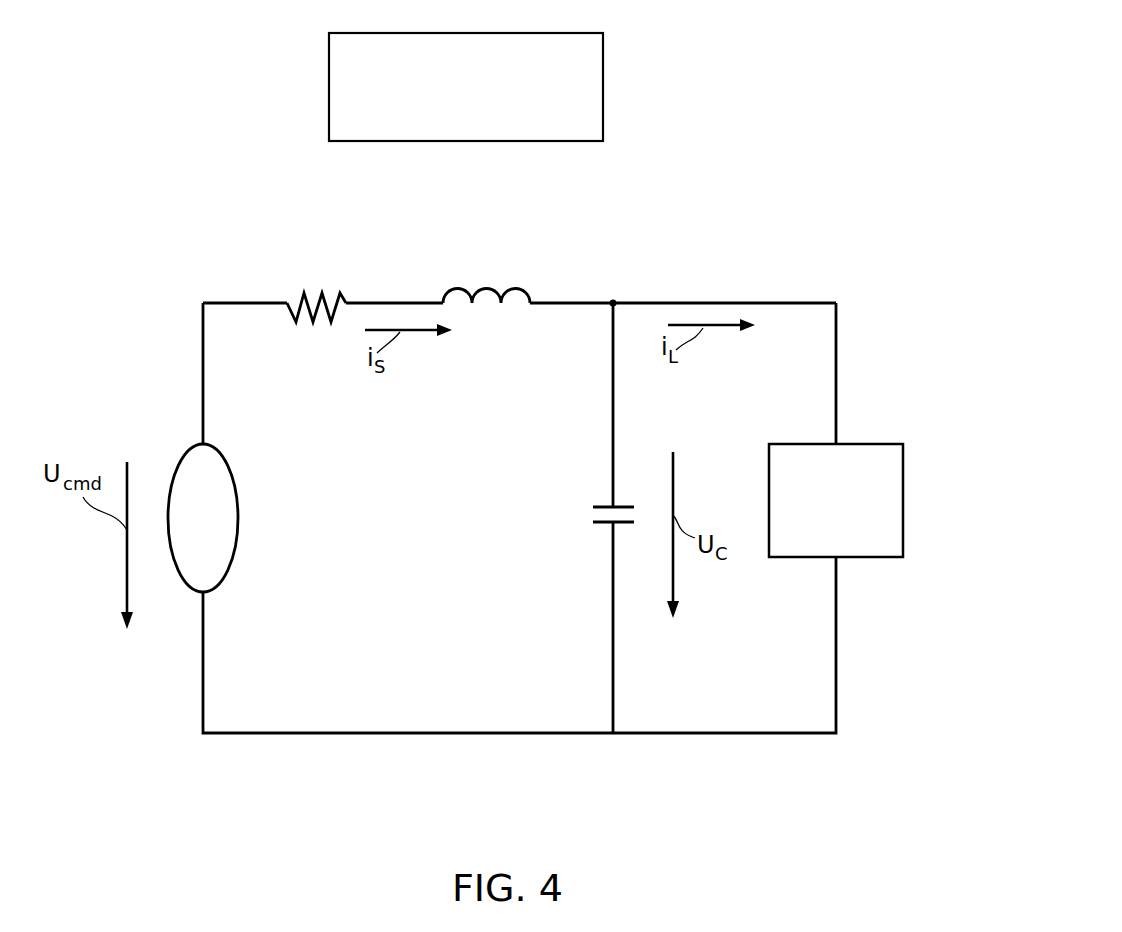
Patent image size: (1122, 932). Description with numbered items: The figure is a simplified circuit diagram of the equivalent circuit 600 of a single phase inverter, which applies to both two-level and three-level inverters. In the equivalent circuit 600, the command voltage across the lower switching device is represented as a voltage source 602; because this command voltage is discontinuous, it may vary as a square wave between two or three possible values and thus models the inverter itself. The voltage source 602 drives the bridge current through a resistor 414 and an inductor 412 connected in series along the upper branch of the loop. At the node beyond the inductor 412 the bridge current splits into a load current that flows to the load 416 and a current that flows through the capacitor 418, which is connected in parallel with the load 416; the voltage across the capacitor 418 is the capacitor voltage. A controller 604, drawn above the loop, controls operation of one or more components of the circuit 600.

The equivalent circuit 600 is at (827, 83).
The controller 604 is at (483, 100).
The resistor 414 is at (320, 292).
The inductor 412 is at (482, 290).
The capacitor 418 is at (596, 507).
The load 416 is at (878, 444).
The voltage source 602 is at (238, 518).